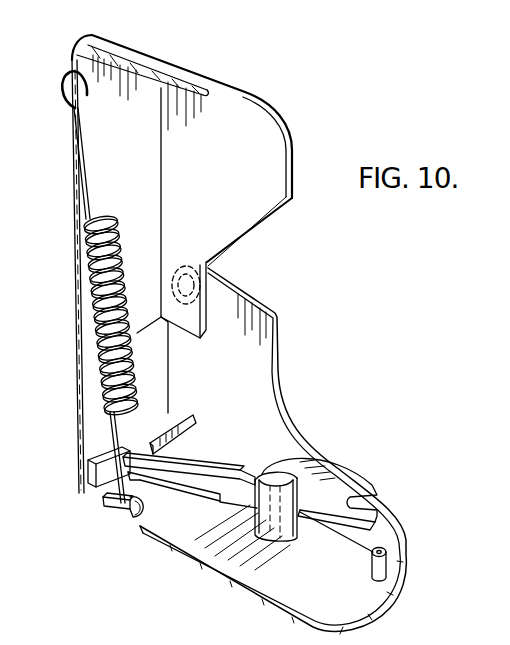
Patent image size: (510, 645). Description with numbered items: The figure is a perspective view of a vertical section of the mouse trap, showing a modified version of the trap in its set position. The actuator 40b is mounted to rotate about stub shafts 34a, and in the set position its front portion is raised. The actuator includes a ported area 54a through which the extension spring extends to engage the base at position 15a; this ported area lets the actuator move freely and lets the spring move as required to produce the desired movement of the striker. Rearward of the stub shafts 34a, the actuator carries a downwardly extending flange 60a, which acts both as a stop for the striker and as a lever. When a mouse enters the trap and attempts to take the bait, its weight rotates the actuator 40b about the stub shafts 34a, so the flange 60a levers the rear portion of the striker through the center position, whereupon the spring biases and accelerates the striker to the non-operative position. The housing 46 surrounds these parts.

The housing 46 is at (212, 70).
The stub shafts 34a is at (147, 435).
The ported area 54a is at (228, 465).
The actuator 40b is at (330, 491).
The downwardly extending flange 60a is at (92, 492).
The position 15a is at (121, 520).